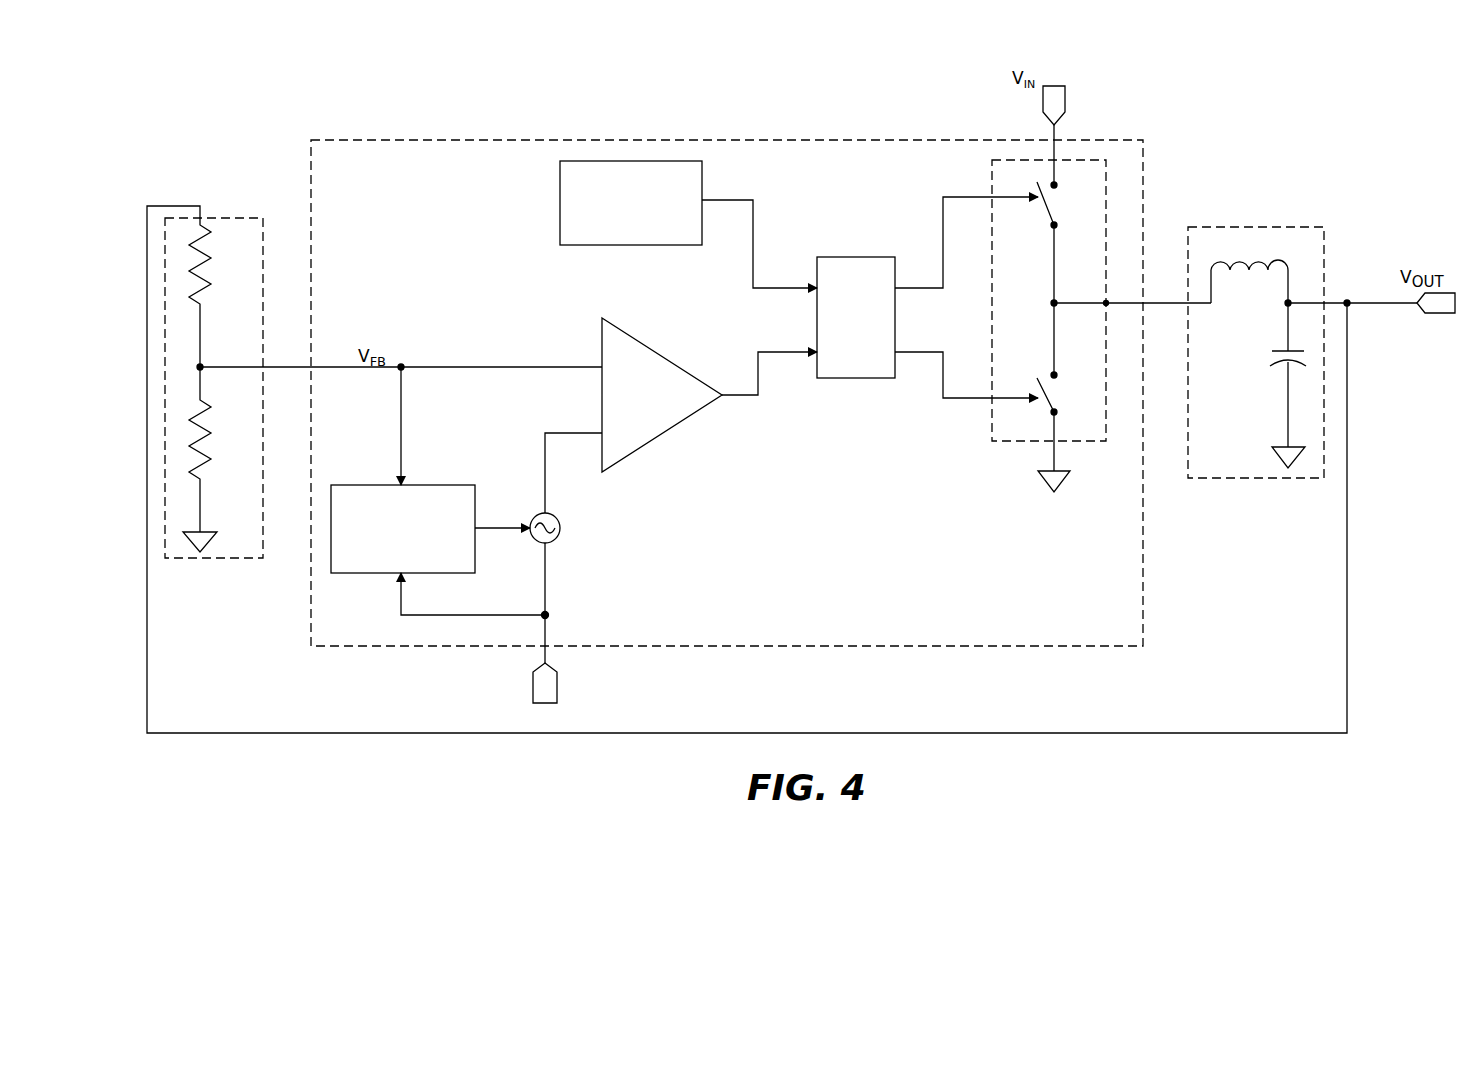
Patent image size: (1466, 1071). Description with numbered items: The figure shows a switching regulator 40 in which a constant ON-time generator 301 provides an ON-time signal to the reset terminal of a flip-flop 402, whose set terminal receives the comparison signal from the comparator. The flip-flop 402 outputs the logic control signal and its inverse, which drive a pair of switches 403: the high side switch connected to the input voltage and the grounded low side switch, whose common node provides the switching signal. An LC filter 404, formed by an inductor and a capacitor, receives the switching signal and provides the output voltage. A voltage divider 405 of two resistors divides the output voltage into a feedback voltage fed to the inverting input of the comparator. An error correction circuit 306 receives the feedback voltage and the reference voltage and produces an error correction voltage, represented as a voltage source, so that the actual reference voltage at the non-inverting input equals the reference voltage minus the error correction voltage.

The switching regulator 40 is at (855, 140).
The constant ON-time (COT) generator 301 is at (612, 245).
The flip-flop 402 is at (863, 378).
The pair of switches 403 is at (1078, 441).
The LC filter 404 is at (1258, 228).
The voltage divider 405 is at (214, 560).
The error correction circuit 306 is at (370, 573).